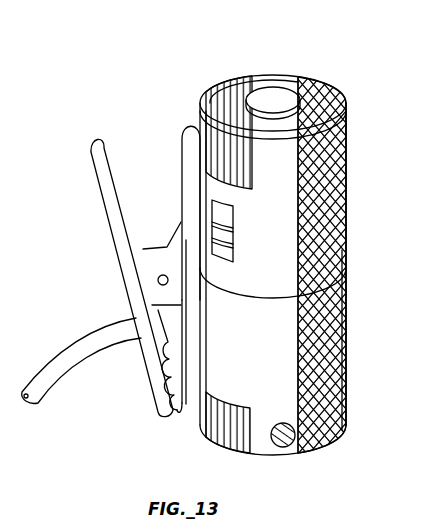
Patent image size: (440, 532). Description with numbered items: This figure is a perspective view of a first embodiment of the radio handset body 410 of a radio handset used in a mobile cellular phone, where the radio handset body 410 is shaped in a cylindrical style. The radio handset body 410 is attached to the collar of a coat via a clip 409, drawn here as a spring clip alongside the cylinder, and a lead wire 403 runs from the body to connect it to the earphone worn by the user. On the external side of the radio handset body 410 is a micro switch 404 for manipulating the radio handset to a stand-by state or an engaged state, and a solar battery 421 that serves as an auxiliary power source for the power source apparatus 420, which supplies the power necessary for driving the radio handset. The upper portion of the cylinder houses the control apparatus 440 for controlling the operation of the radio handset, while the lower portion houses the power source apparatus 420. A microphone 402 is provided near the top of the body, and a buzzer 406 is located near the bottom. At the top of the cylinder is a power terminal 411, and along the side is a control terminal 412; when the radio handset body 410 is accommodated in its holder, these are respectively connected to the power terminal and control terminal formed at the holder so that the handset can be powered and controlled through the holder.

The radio handset body 410 is at (333, 78).
The microphone 402 is at (238, 98).
The power terminal 411 is at (272, 92).
The control terminal 412 is at (347, 253).
The solar battery 421 is at (357, 153).
The control apparatus 440 is at (282, 226).
The micro switch 404 is at (212, 212).
The power source apparatus 420 is at (282, 360).
The buzzer 406 is at (282, 441).
The clip 409 is at (112, 216).
The lead wire 403 is at (97, 332).